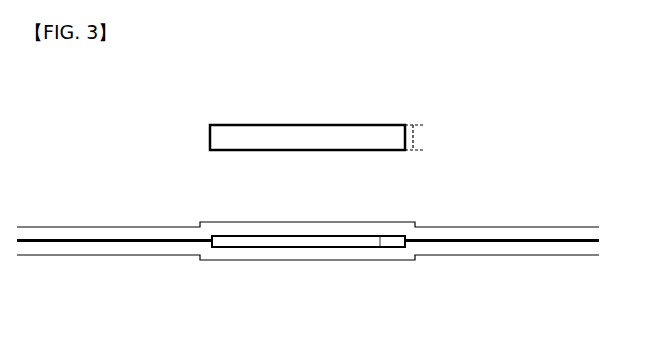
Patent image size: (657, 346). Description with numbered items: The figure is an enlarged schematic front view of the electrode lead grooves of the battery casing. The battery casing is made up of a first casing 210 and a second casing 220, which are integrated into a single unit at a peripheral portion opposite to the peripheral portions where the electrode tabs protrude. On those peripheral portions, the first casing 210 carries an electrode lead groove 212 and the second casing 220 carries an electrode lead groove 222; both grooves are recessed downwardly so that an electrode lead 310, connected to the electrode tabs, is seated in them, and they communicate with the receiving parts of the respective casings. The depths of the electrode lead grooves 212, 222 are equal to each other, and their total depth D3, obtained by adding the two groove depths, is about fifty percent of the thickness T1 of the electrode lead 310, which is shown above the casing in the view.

The first casing 210 is at (108, 282).
The second casing 220 is at (118, 204).
The electrode lead groove 222 is at (338, 236).
The electrode lead groove 212 is at (338, 248).
The electrode lead 310 is at (297, 125).
The thickness of the electrode leads T1 is at (415, 133).
The total depth of the electrode lead grooves D3 is at (380, 238).